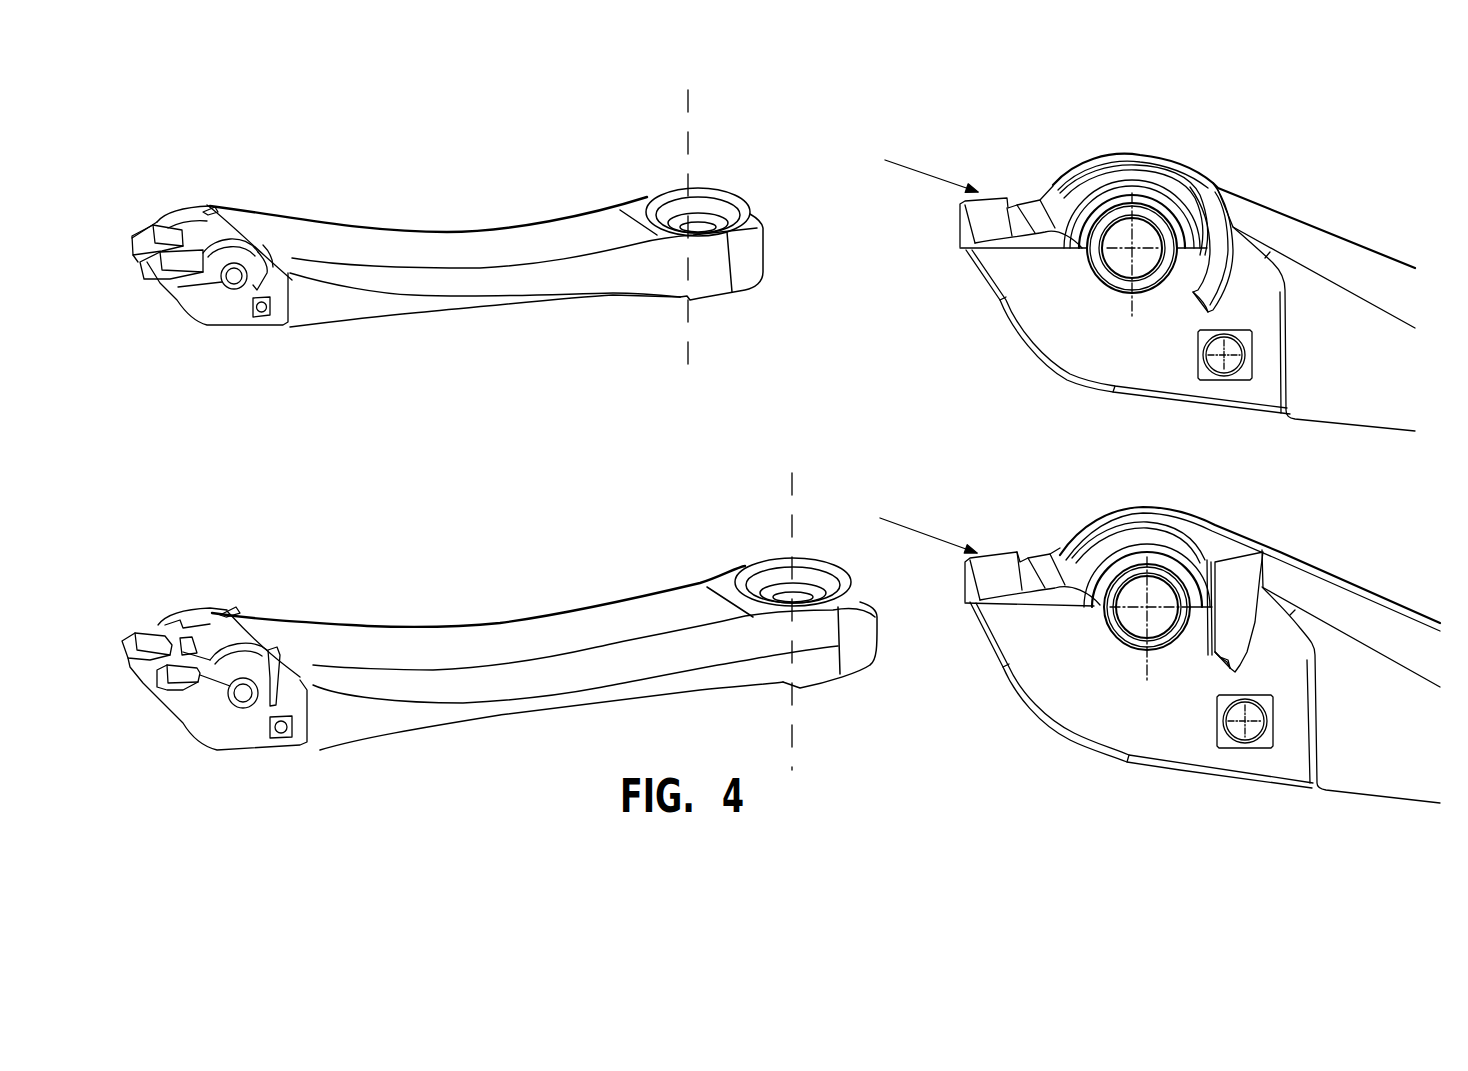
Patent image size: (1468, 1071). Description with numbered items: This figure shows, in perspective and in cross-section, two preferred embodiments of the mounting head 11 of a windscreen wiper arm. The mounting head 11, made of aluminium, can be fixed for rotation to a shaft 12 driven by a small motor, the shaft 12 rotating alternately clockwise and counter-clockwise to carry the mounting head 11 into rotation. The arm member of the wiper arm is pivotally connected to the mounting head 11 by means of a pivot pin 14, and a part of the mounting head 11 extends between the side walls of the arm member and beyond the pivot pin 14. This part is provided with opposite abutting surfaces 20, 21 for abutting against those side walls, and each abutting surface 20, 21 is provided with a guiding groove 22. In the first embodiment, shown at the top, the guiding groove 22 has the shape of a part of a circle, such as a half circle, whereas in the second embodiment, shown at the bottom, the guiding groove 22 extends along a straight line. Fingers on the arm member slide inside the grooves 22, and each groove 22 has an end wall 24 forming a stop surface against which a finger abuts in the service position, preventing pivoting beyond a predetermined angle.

The mounting head 11 is at (480, 173).
The shaft 12 is at (690, 108).
The pivot pin 14 is at (1133, 242).
The abutting surface 20 is at (223, 313).
The abutting surface 21 is at (172, 207).
The guiding groove 22 is at (215, 207).
The end wall 24 is at (1203, 303).